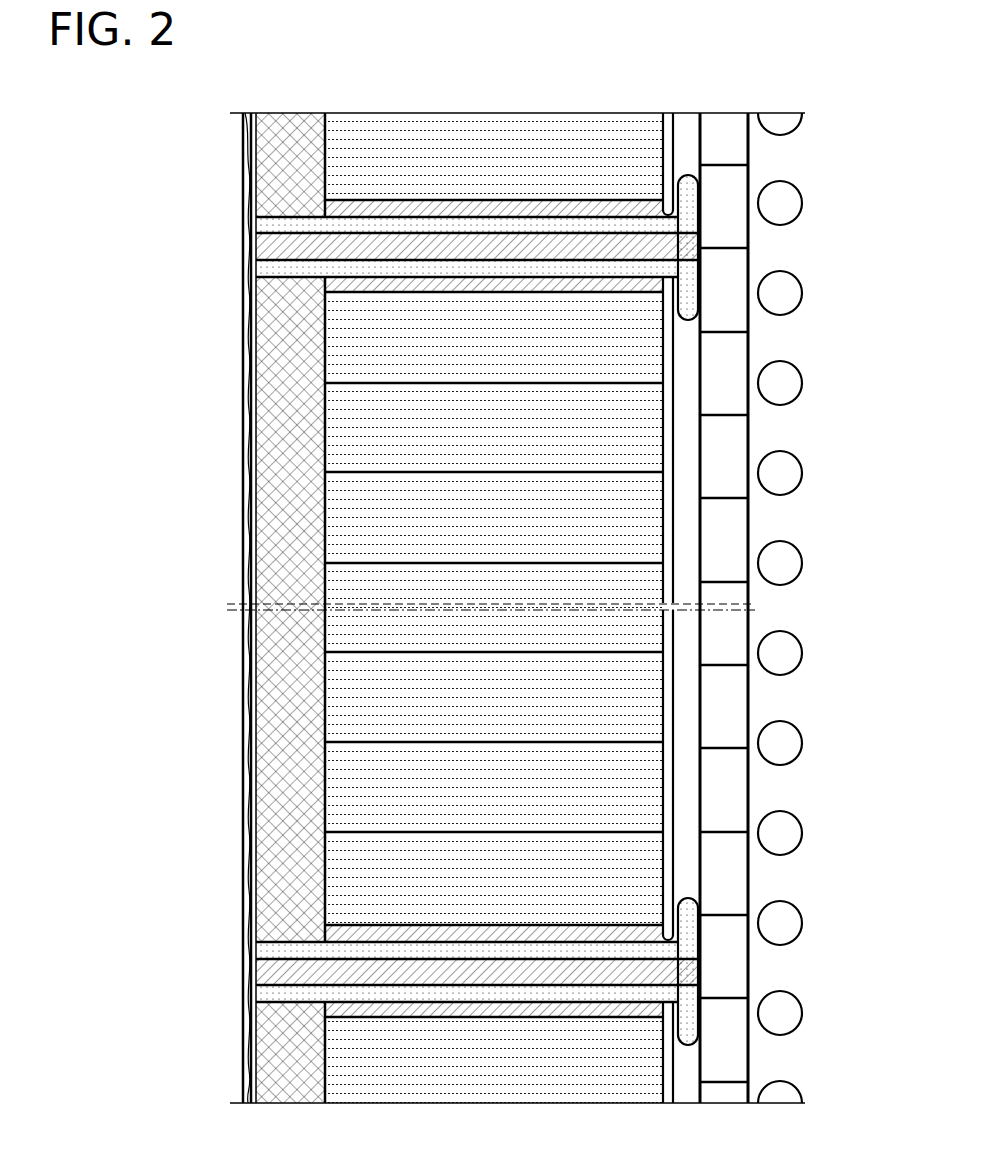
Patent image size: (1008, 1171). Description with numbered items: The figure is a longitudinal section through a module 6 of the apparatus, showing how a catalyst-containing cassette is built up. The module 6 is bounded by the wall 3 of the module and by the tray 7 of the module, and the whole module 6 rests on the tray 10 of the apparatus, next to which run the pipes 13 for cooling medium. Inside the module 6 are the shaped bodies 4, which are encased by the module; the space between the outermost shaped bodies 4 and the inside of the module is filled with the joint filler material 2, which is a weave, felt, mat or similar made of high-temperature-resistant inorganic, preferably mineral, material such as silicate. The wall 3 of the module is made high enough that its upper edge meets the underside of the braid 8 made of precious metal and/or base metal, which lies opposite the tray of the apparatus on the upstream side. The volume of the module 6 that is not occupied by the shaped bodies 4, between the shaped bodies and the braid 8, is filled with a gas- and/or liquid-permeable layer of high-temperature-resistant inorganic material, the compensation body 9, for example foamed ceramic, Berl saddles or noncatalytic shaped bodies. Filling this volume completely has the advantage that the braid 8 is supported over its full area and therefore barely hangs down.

The joint filler material 2 is at (338, 211).
The wall of a module 3 is at (270, 228).
The shaped bodies 4 is at (345, 437).
The module 6 is at (224, 665).
The tray of a module 7 is at (675, 133).
The braid made of precious metal and/or base metal 8 is at (243, 553).
The compensation body 9 is at (283, 766).
The tray of the apparatus 10 is at (735, 793).
The pipes for cooling medium 13 is at (780, 293).